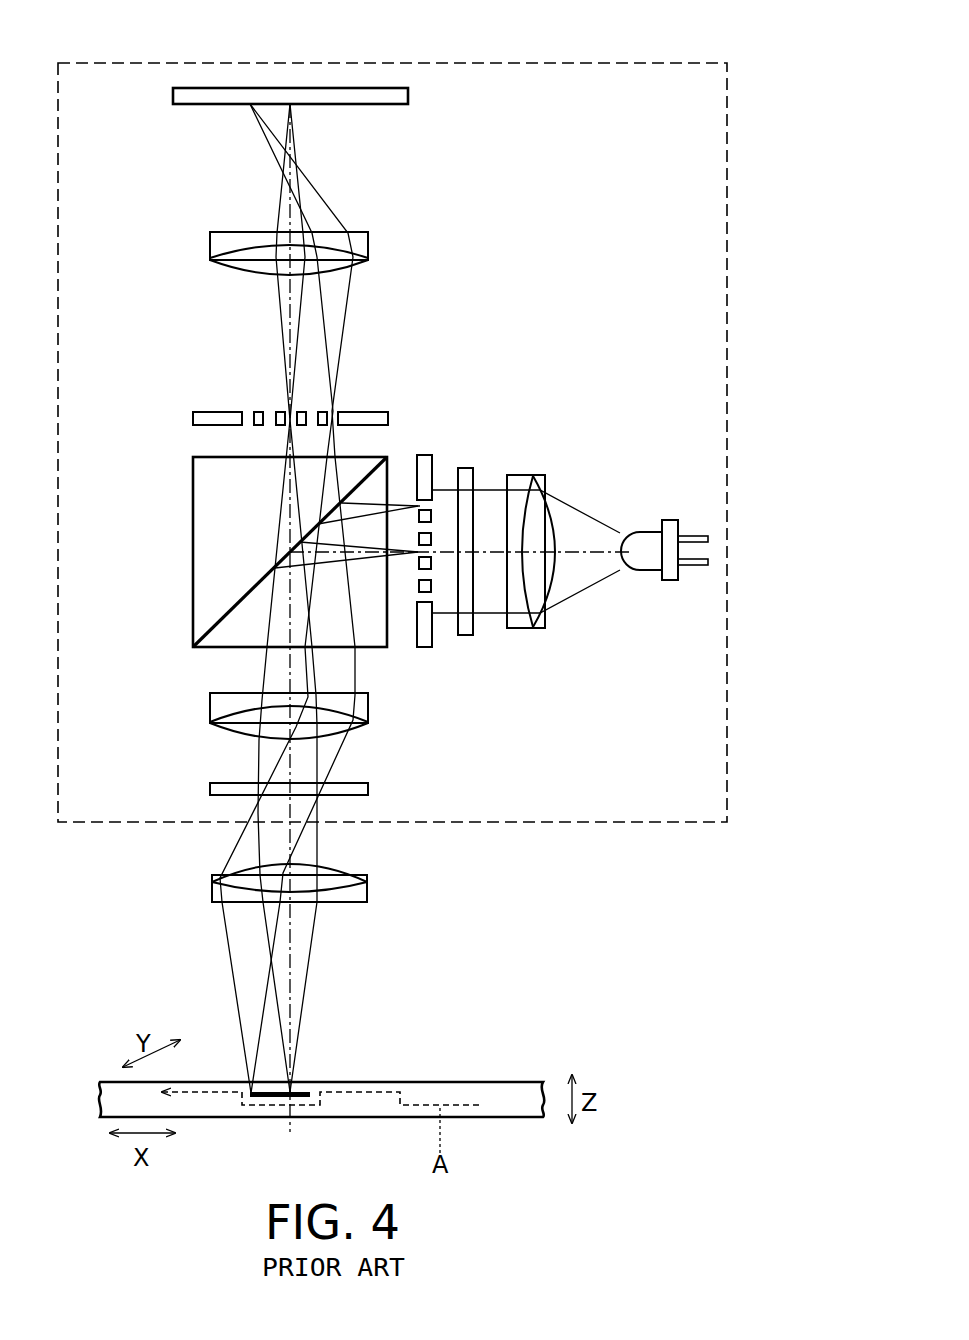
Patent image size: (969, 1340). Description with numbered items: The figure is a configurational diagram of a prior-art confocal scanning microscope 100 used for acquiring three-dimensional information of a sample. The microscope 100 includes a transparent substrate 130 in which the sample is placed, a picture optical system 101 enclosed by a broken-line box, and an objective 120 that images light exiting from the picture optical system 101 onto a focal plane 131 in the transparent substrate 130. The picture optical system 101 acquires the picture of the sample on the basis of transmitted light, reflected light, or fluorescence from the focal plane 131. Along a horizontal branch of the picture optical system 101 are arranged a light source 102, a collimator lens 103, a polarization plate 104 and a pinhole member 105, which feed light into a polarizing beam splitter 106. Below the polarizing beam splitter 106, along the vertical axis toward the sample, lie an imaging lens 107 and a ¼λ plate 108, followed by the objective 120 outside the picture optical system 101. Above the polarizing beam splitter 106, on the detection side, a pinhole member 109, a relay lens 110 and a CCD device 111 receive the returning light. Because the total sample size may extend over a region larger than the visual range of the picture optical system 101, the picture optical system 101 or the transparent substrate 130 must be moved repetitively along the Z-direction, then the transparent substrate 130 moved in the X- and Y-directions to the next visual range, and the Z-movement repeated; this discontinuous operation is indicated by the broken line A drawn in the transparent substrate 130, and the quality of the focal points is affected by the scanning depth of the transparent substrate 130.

The confocal scanning microscope 100 is at (527, 34).
The picture optical system 101 is at (640, 63).
The light source 102 is at (643, 531).
The collimator lens 103 is at (522, 475).
The polarization plate 104 is at (465, 468).
The pinhole member 105 is at (423, 455).
The polarizing beam splitter 106 is at (216, 626).
The imaging lens 107 is at (368, 710).
The ¼λ plate 108 is at (368, 788).
The pinhole member 109 is at (193, 414).
The relay lens 110 is at (210, 232).
The CCD device 111 is at (173, 92).
The objective 120 is at (367, 890).
The transparent substrate 130 is at (494, 1082).
The focal plane 131 is at (310, 1082).